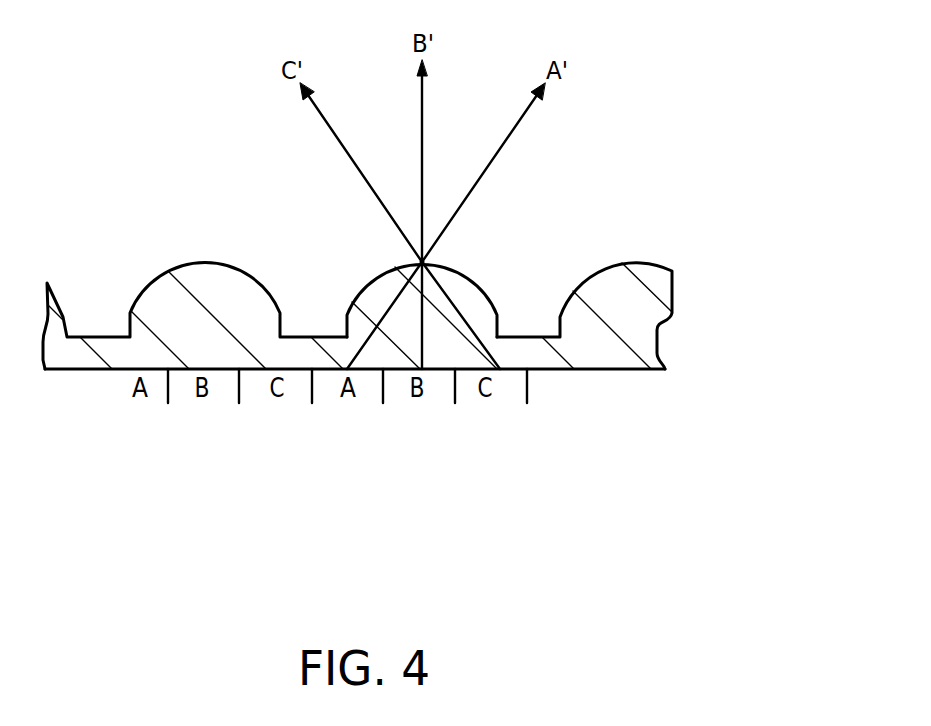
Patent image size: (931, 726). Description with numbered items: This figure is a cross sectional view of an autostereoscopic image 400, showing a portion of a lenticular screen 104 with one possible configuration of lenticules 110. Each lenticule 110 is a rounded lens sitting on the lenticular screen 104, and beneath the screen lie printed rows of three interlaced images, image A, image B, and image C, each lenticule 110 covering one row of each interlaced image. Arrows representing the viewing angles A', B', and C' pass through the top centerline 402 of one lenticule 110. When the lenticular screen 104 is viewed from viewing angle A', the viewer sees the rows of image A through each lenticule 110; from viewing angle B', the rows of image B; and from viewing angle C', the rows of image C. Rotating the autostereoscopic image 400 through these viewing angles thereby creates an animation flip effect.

The lenticular screen 104 is at (77, 369).
The lenticule 110 is at (368, 283).
The autostereoscopic image 400 is at (707, 288).
The top centerline 402 is at (422, 262).